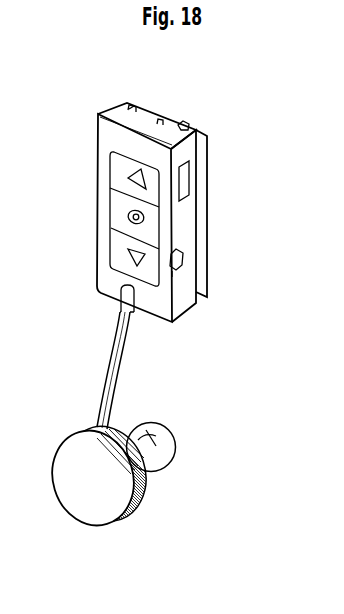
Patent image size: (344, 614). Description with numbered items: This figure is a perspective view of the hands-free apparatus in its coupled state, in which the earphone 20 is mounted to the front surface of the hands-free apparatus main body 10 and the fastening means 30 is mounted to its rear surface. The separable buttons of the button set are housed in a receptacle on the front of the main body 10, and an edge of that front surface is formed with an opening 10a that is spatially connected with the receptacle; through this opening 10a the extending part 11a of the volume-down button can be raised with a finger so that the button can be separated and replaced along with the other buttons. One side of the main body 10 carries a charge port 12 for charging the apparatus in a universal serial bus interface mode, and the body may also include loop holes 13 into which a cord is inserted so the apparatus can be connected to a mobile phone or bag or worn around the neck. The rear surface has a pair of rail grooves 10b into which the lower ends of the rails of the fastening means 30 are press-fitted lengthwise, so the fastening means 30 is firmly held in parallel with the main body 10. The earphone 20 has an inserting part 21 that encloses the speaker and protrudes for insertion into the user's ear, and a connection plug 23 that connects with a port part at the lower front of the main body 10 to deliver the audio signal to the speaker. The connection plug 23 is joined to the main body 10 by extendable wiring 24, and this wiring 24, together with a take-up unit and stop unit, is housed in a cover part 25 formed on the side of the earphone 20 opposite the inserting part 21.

The hands-free apparatus main body 10 is at (99, 110).
The opening 10a is at (181, 258).
The rail grooves 10b is at (183, 122).
The extending part 11a is at (172, 273).
The charge port 12 is at (191, 171).
The loop holes 13 is at (134, 113).
The earphone 20 is at (125, 493).
The inserting part 21 is at (157, 435).
The connection plug 23 is at (120, 308).
The wiring 24 is at (103, 378).
The cover part 25 is at (150, 490).
The back plate 30 is at (209, 192).